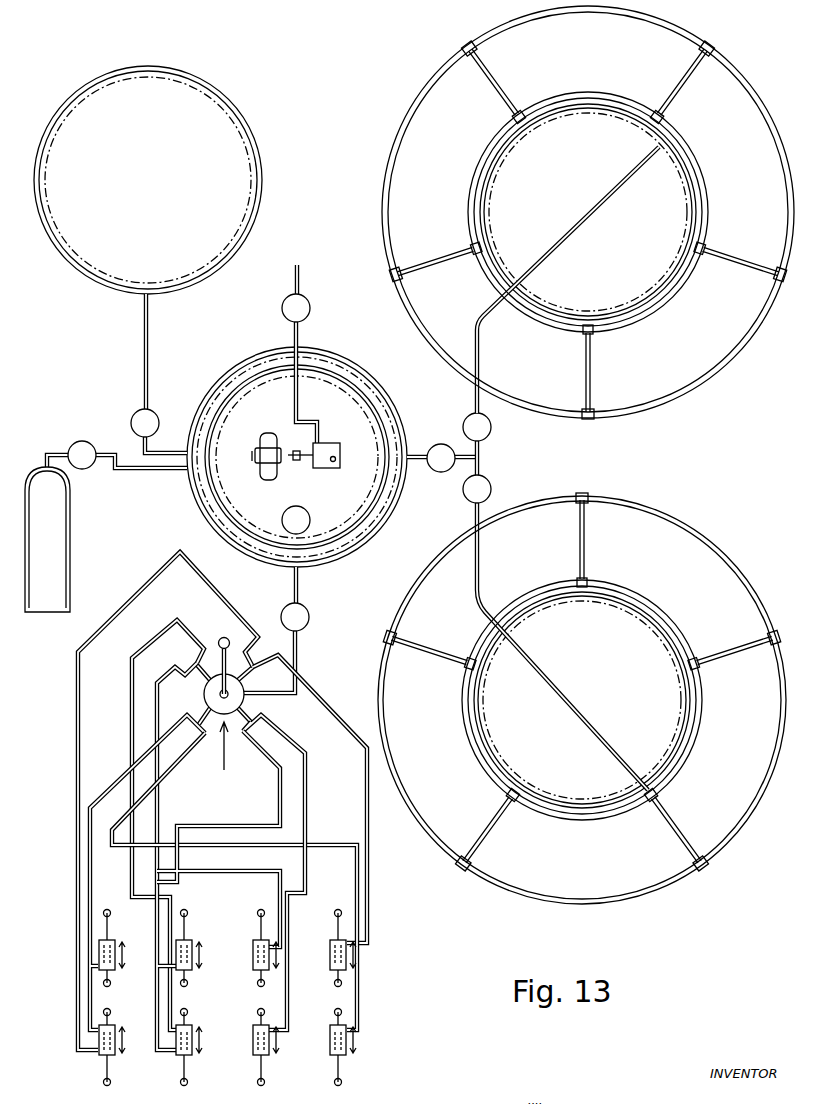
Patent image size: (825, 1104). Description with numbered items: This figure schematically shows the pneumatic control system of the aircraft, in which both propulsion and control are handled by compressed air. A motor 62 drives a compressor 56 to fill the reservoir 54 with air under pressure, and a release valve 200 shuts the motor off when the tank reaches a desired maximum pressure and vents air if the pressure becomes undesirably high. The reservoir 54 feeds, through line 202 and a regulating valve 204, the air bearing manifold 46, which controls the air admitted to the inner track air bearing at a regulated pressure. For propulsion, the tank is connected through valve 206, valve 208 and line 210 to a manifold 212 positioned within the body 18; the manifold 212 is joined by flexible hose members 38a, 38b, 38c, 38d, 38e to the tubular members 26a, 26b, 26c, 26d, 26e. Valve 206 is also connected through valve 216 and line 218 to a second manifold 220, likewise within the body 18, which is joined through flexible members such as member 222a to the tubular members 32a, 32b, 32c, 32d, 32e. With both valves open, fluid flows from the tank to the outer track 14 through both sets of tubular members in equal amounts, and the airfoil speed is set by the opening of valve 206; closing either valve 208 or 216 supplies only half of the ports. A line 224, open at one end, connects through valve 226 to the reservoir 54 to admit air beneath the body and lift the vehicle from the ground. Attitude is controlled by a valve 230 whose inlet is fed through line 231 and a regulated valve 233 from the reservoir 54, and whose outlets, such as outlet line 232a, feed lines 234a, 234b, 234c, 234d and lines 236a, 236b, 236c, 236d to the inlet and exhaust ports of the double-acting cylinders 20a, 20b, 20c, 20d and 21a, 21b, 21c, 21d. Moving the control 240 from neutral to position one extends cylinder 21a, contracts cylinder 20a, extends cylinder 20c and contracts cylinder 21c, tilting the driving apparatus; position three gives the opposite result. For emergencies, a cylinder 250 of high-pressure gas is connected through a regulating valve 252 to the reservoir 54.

The outer track 14 is at (384, 196).
The body 18 is at (212, 98).
The air bearing manifold 46 is at (258, 150).
The reservoir 54 is at (262, 352).
The compressor 56 is at (332, 444).
The motor 62 is at (266, 476).
The release valve 200 is at (310, 512).
The line 202 is at (150, 336).
The regulating valve 204 is at (152, 410).
The valve 206 is at (446, 437).
The valve 208 is at (493, 428).
The line 210 is at (486, 322).
The manifold 212 is at (500, 178).
The valve 216 is at (492, 480).
The line 218 is at (486, 556).
The manifold 220 is at (546, 614).
The flexible member 222a is at (480, 676).
The line 224 is at (294, 273).
The valve 226 is at (284, 304).
The valve 230 is at (246, 700).
The line 231 is at (306, 658).
The outlet line 232a is at (204, 720).
The regulated valve 233 is at (284, 610).
The line 234a is at (92, 800).
The line 234b is at (134, 662).
The line 234c is at (310, 690).
The line 234d is at (308, 772).
The line 236a is at (254, 844).
The line 236b is at (150, 696).
The line 236c is at (76, 722).
The line 236d is at (244, 826).
The control 240 is at (235, 628).
The cylinder of gas 250 is at (28, 606).
The regulating valve 252 is at (90, 440).
The tubular member 26a is at (448, 260).
The tubular member 26b is at (504, 82).
The tubular member 26c is at (674, 102).
The tubular member 26d is at (746, 265).
The tubular member 26e is at (585, 354).
The flexible hose member 38a is at (494, 232).
The flexible hose member 38b is at (530, 128).
The flexible hose member 38c is at (648, 128).
The flexible hose member 38d is at (690, 248).
The flexible hose member 38e is at (590, 324).
The tubular member 32a is at (432, 654).
The tubular member 32b is at (582, 560).
The tubular member 32c is at (732, 652).
The tubular member 32d is at (674, 812).
The tubular member 32e is at (482, 826).
The cylinder 20a is at (112, 972).
The cylinder 20b is at (190, 972).
The cylinder 20c is at (330, 934).
The cylinder 20d is at (254, 940).
The cylinder 21a is at (114, 1056).
The cylinder 21b is at (192, 1024).
The cylinder 21c is at (332, 1060).
The cylinder 21d is at (256, 1058).